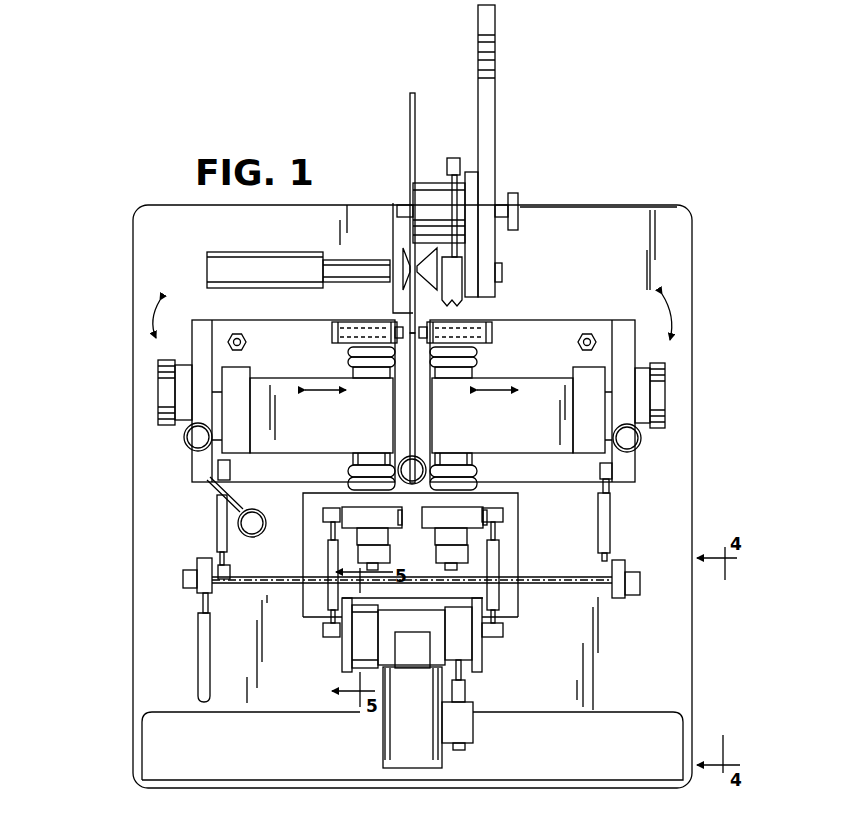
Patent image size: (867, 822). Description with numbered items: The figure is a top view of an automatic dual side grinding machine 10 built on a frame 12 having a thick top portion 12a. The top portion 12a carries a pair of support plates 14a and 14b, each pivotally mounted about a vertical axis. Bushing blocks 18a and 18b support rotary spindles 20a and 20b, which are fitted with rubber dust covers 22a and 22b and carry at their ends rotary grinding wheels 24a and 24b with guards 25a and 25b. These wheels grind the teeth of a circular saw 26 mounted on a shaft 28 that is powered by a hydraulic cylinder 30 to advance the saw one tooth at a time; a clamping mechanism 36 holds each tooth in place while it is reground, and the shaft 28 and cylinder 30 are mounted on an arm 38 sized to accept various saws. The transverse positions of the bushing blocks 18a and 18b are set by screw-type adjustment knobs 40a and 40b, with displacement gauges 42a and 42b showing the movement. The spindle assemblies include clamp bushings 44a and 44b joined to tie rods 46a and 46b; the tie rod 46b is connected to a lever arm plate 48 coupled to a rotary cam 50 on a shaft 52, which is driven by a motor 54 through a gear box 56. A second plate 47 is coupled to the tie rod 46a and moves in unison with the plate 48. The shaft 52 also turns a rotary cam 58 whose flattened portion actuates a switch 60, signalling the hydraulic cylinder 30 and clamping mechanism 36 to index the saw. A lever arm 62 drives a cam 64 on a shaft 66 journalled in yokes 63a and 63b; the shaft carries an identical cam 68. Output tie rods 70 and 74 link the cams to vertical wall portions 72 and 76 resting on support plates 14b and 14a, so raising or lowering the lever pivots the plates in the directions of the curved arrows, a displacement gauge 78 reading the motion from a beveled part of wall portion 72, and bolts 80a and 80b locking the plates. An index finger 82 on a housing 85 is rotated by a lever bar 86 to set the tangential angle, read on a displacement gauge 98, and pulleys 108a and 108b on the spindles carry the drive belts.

The automatic dual side grinding machine 10 is at (694, 258).
The frame 12 is at (692, 302).
The top portion 12a is at (592, 216).
The support plate 14a is at (572, 354).
The support plate 14b is at (300, 354).
The bushing block 18a is at (538, 420).
The bushing block 18b is at (316, 420).
The rotary spindle 20a is at (490, 450).
The rotary spindle 20b is at (356, 458).
The rubber dust cover 22a is at (478, 366).
The rubber dust cover 22b is at (350, 366).
The rotary grinding wheel 24a is at (464, 326).
The rotary grinding wheel 24b is at (392, 322).
The guard 25a is at (493, 332).
The guard 25b is at (332, 336).
The circular saw 26 is at (409, 118).
The shaft 28 is at (399, 206).
The hydraulic cylinder 30 is at (463, 262).
The clamping mechanism 36 is at (285, 252).
The arm 38 is at (497, 116).
The adjustment knob 40a is at (665, 400).
The adjustment knob 40b is at (158, 388).
The displacement gauge 42a is at (632, 440).
The displacement gauge 42b is at (192, 440).
The clamp bushing 44a is at (470, 520).
The clamp bushing 44b is at (390, 516).
The tie rod 46a is at (470, 552).
The tie rod 46b is at (356, 552).
The plate 47 is at (480, 648).
The lever arm plate 48 is at (346, 666).
The rotary cam 50 is at (366, 646).
The shaft 52 is at (388, 668).
The motor 54 is at (390, 738).
The gear box 56 is at (426, 658).
The rotary cam 58 is at (462, 642).
The switch 60 is at (466, 706).
The lever arm 62 is at (198, 640).
The yoke 63a is at (640, 582).
The yoke 63b is at (183, 578).
The cam 64 is at (205, 556).
The shaft 66 is at (588, 584).
The cam 68 is at (620, 560).
The output tie rod 70 is at (218, 530).
The vertical wall portion 72 is at (215, 478).
The output tie rod 74 is at (610, 510).
The vertical wall portion 76 is at (612, 478).
The displacement gauge 78 is at (256, 522).
The bolt 80a is at (589, 333).
The bolt 80b is at (240, 333).
The index finger 82 is at (430, 378).
The housing 85 is at (405, 398).
The lever bar 86 is at (416, 424).
The displacement gauge 98 is at (404, 460).
The pulley 108a is at (500, 552).
The pulley 108b is at (328, 556).